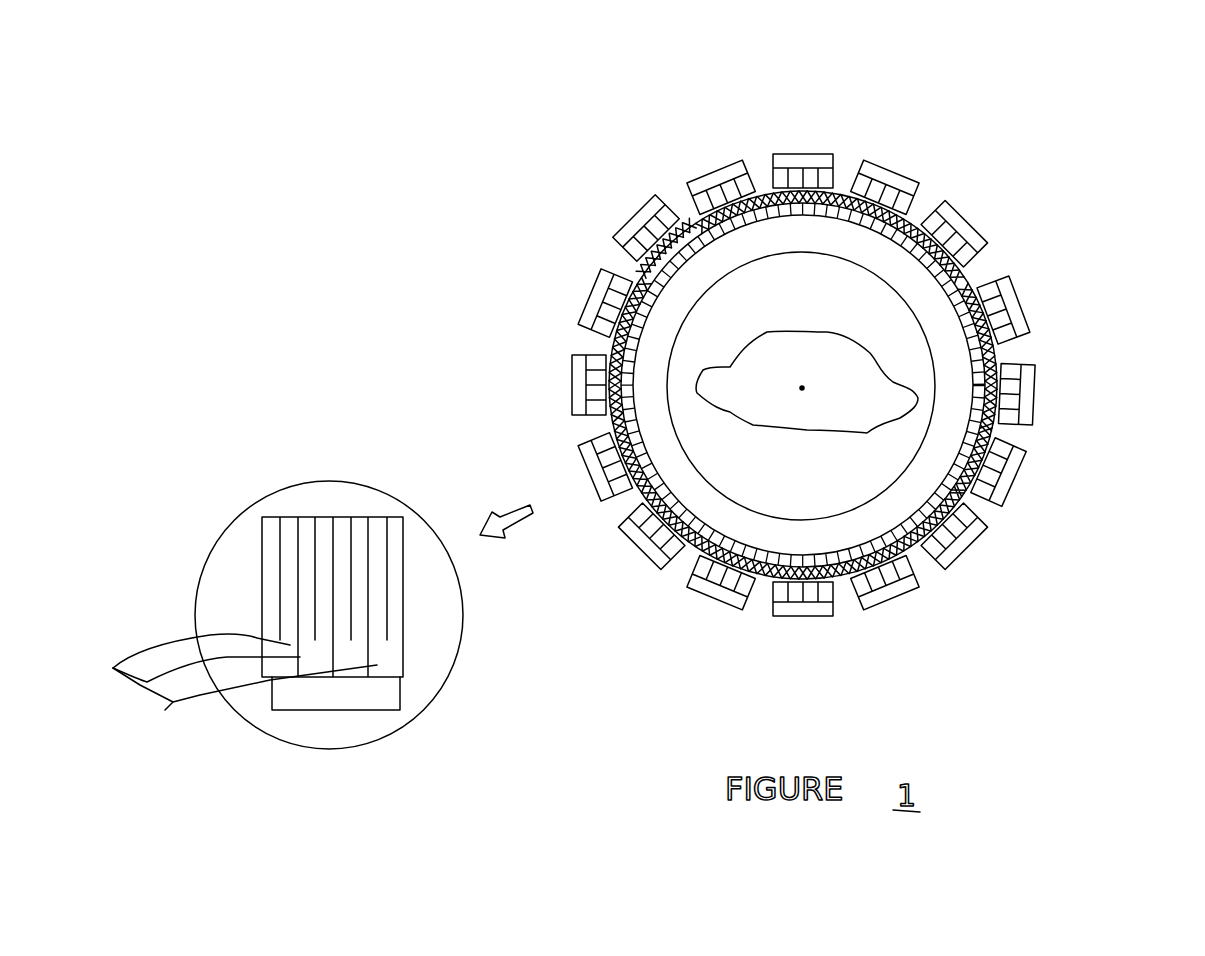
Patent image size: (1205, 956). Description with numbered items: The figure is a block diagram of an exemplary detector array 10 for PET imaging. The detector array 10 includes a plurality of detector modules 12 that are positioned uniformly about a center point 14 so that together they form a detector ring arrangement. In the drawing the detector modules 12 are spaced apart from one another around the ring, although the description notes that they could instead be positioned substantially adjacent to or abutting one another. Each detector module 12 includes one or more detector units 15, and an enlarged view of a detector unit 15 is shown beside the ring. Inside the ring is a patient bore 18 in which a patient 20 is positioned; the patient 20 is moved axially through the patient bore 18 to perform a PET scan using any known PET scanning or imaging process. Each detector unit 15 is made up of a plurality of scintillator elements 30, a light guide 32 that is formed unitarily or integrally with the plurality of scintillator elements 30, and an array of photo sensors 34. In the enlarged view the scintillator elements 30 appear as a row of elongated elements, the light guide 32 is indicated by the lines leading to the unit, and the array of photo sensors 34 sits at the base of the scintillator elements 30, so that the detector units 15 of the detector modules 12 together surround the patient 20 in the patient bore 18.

The detector array 10 is at (1088, 108).
The detector module 12 is at (802, 119).
The center point 14 is at (802, 388).
The detector unit 15 is at (268, 488).
The patient bore 18 is at (707, 288).
The patient 20 is at (800, 330).
The scintillator elements 30 is at (390, 532).
The light guide 32 is at (221, 672).
The array of photo sensors 34 is at (397, 697).